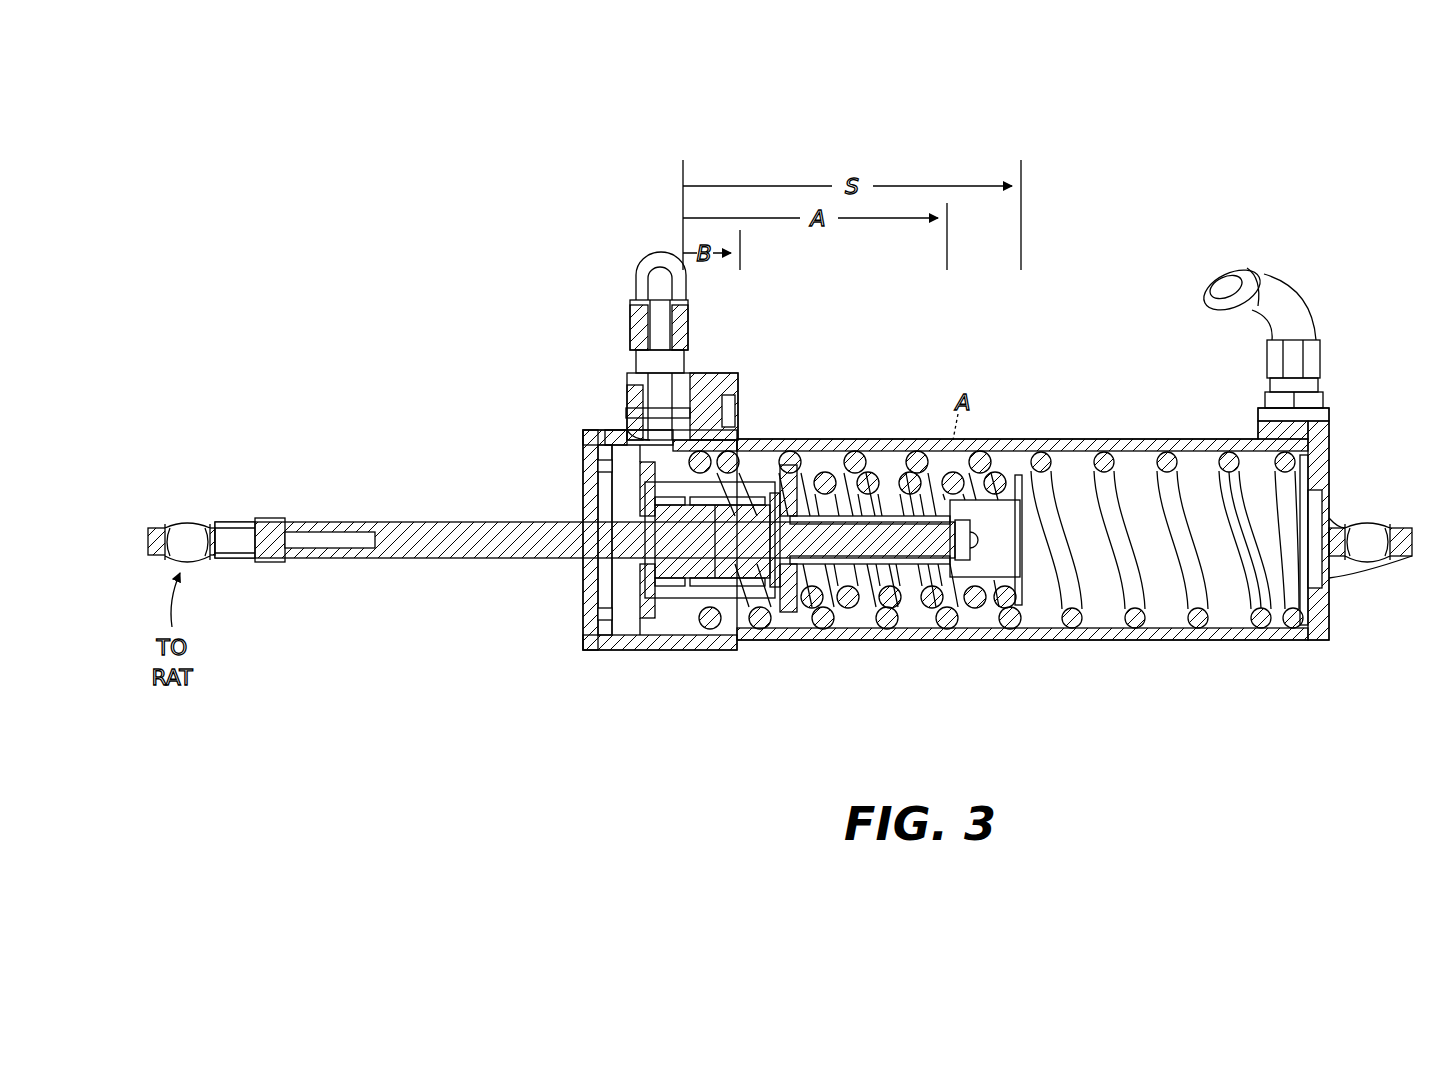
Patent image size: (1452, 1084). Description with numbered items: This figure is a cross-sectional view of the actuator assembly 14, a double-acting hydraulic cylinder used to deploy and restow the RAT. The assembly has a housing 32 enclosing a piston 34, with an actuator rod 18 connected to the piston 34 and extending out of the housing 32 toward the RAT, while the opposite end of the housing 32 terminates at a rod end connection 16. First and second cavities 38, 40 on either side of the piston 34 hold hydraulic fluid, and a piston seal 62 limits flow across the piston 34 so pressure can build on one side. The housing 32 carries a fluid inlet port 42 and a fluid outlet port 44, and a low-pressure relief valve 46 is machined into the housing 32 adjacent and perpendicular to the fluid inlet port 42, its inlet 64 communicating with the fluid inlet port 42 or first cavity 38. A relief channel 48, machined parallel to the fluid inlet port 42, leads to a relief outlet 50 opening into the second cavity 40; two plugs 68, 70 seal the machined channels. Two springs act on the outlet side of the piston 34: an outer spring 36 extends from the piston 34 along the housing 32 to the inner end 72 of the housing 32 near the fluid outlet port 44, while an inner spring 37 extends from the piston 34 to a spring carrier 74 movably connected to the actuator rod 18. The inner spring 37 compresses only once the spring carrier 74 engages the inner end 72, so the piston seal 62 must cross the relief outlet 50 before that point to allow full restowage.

The actuator assembly 14 is at (926, 343).
The rod end connection 16 is at (1396, 558).
The actuator rod 18 is at (474, 560).
The housing 32 is at (897, 642).
The piston 34 is at (803, 590).
The outer spring 36 is at (1092, 620).
The inner spring 37 is at (973, 608).
The first cavity 38 is at (665, 615).
The second cavity 40 is at (1218, 598).
The fluid inlet port 42 is at (652, 440).
The fluid outlet port 44 is at (1295, 322).
The low-pressure relief valve 46 is at (725, 432).
The relief channel 48 is at (742, 440).
The relief outlet 50 is at (757, 460).
The piston seal 62 is at (683, 462).
The inlet of the low-pressure relief valve 64 is at (690, 418).
The plug 68 is at (636, 414).
The plug 70 is at (726, 390).
The inner end of the housing 72 is at (1300, 535).
The spring carrier 74 is at (1040, 460).